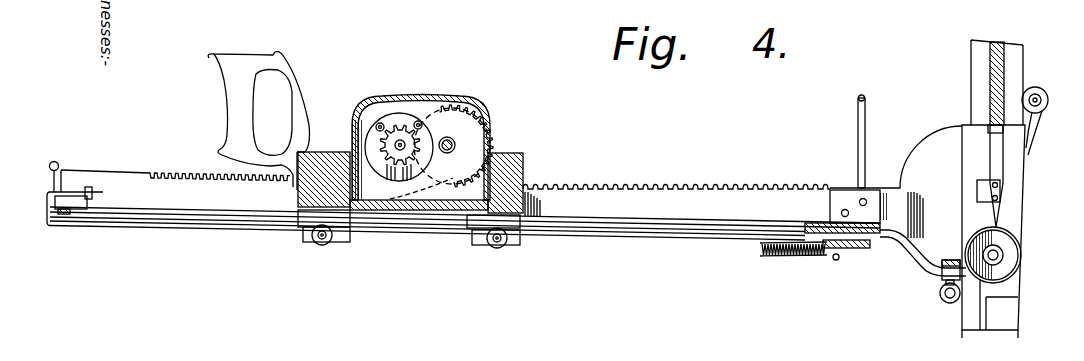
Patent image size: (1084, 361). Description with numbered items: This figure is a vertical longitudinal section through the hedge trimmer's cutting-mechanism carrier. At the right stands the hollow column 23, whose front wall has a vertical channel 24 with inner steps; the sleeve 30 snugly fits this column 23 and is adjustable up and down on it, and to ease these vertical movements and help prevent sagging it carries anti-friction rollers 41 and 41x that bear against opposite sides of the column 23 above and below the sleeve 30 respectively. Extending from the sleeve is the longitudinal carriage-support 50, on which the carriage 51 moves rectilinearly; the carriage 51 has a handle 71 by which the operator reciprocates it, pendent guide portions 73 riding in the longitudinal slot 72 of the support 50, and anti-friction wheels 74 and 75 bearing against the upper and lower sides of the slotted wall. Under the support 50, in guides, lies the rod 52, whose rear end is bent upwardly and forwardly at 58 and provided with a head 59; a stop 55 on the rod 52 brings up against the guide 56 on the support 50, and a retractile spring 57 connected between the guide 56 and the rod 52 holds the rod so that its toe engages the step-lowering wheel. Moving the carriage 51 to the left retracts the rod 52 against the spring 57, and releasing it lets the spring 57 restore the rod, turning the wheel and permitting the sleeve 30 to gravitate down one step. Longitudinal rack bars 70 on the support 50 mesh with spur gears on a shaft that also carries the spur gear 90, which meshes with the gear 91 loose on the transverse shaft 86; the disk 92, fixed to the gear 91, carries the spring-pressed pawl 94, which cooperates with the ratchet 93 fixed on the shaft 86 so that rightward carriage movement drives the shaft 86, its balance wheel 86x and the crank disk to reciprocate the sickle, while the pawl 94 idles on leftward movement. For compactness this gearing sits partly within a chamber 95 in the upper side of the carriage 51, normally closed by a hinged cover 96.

The handle 71 is at (297, 77).
The upwardly and forwardly bent rear end of rod 58 is at (78, 192).
The head 59 is at (97, 190).
The anti-friction wheels 74 is at (546, 185).
The longitudinal rack bars 70 is at (648, 185).
The longitudinal carriage-support 50 is at (678, 210).
The rod 52 is at (577, 235).
The longitudinal slot 72 is at (727, 220).
The carriage 51 is at (525, 153).
The chamber 95 is at (462, 192).
The transverse shaft 86 is at (467, 108).
The hinged cover 96 is at (503, 132).
The balance wheel 86x is at (372, 106).
The spring-pressed pawl 94 is at (400, 143).
The ratchet 93 is at (388, 172).
The disk 92 is at (460, 123).
The spur gear 90 is at (451, 128).
The pendent guide portions 73 is at (344, 240).
The anti-friction wheels 75 is at (322, 242).
The stop 55 is at (820, 237).
The retractile spring 57 is at (800, 258).
The guide 56 is at (855, 252).
The sleeve 30 is at (1020, 200).
The vertical channel 24 is at (1000, 78).
The anti-friction roller 41 is at (1048, 99).
The anti-friction roller 41x is at (946, 302).
The column 23 is at (977, 318).
The gear 91 is at (866, 125).